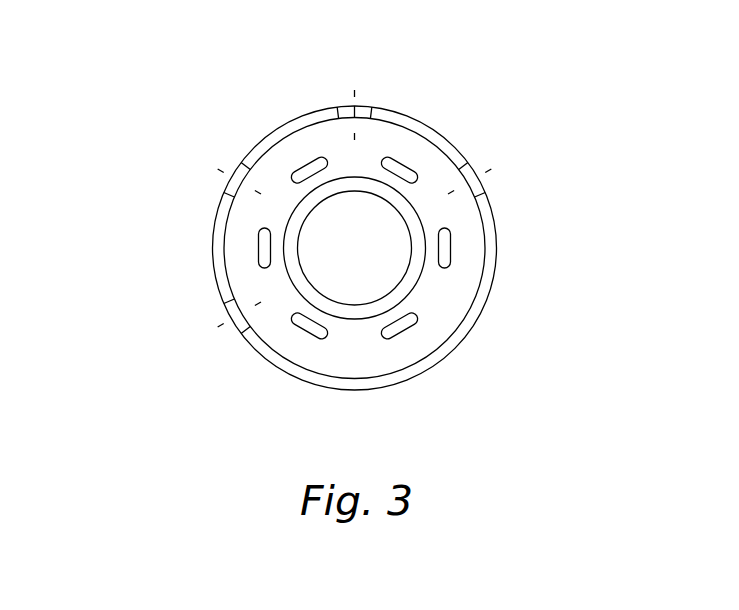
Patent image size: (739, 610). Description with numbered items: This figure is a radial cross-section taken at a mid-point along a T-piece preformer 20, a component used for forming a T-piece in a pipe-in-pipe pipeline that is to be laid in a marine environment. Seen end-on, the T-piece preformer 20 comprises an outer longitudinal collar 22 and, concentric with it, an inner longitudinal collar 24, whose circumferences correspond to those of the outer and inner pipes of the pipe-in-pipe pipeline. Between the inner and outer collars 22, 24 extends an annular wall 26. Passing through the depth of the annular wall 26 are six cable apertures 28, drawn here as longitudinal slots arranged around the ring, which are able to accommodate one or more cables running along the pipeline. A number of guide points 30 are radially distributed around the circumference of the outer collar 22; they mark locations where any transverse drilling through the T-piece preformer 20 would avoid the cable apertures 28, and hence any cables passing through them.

The T-piece preformer 20 is at (145, 285).
The outer longitudinal collar 22 is at (262, 142).
The inner longitudinal collar 24 is at (360, 319).
The annular wall 26 is at (460, 281).
The cable apertures 28 is at (253, 237).
The guide points 30 is at (201, 166).